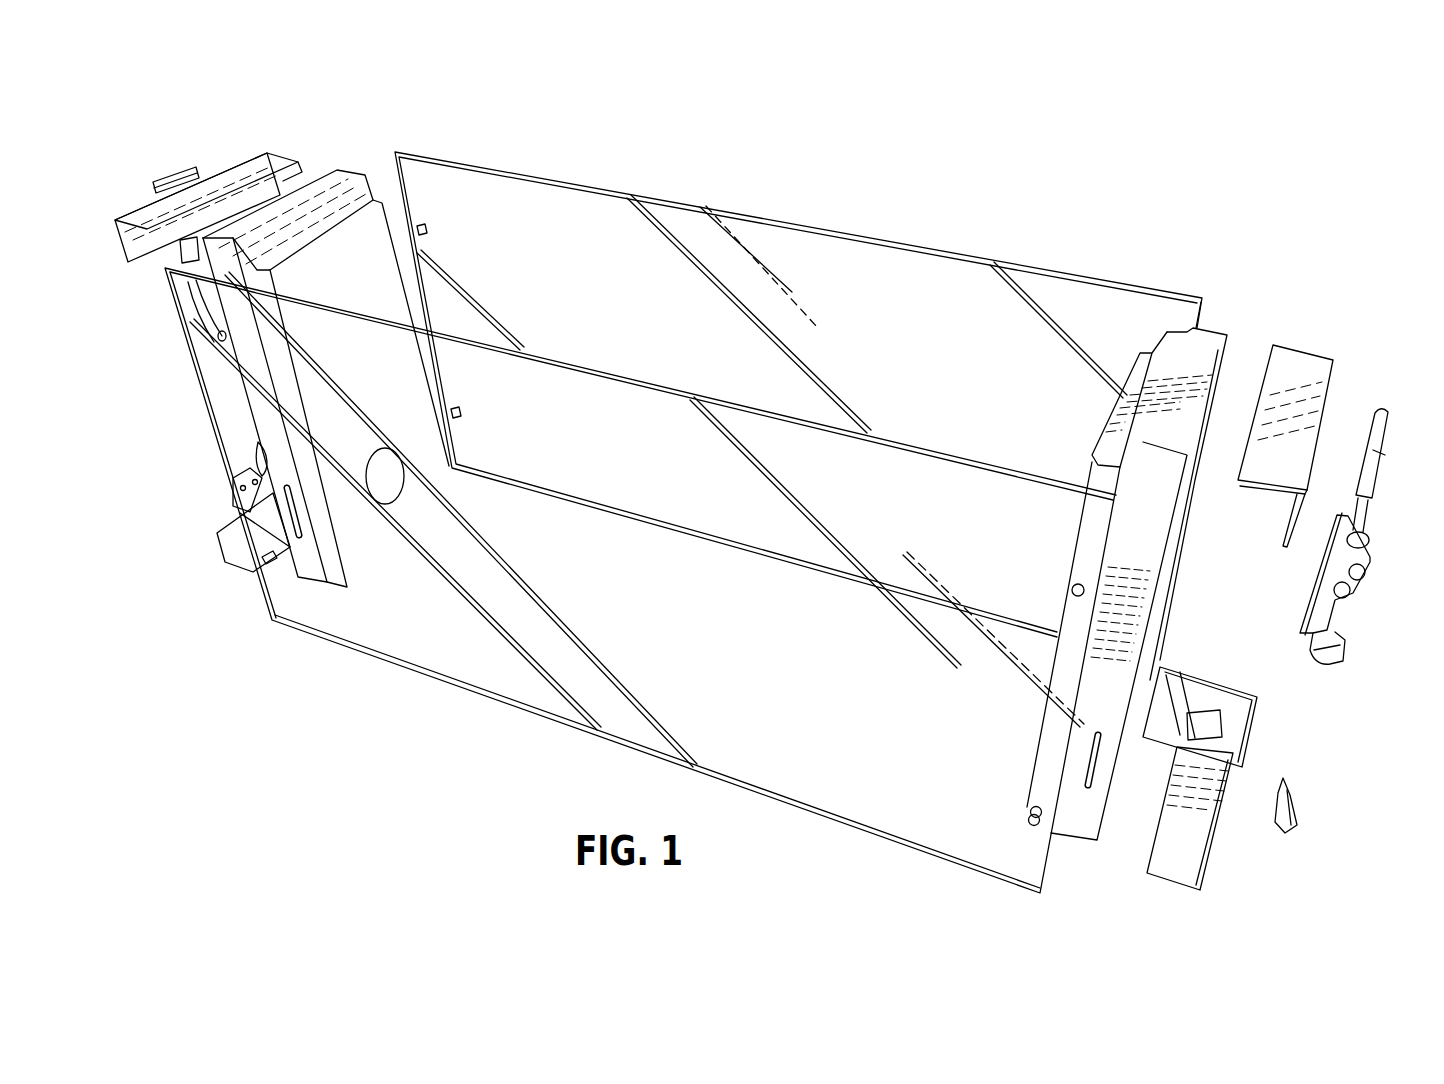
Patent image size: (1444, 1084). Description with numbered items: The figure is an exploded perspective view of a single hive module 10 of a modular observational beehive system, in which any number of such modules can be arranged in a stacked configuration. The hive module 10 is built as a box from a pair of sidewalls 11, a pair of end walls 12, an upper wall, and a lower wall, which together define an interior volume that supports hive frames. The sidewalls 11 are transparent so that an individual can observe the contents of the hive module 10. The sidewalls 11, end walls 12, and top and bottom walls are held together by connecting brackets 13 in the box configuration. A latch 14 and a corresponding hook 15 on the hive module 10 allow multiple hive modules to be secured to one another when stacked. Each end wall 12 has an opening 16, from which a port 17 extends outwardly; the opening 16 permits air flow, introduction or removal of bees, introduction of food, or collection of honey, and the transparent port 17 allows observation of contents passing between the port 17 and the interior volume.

The hive module 10 is at (281, 116).
The sidewall 11 is at (823, 258).
The end wall 12 is at (343, 178).
The connecting bracket 13 is at (140, 195).
The latch 14 is at (1343, 661).
The hook 15 is at (1303, 820).
The opening 16 is at (387, 477).
The port 17 is at (1263, 697).